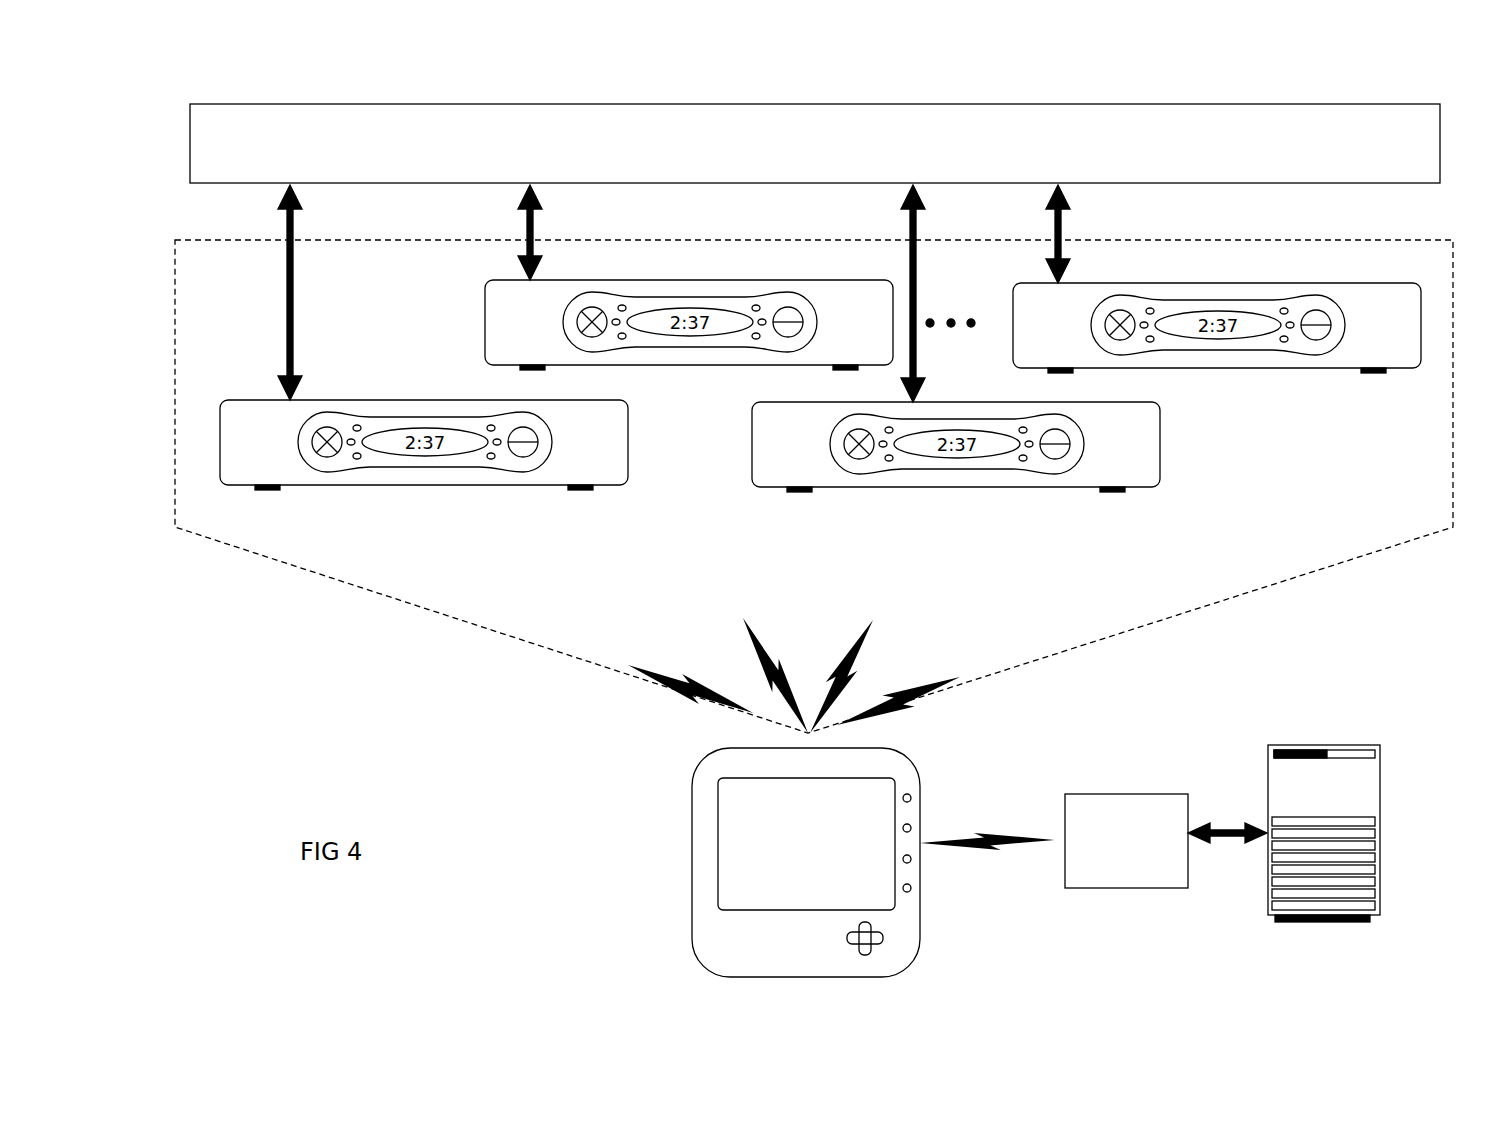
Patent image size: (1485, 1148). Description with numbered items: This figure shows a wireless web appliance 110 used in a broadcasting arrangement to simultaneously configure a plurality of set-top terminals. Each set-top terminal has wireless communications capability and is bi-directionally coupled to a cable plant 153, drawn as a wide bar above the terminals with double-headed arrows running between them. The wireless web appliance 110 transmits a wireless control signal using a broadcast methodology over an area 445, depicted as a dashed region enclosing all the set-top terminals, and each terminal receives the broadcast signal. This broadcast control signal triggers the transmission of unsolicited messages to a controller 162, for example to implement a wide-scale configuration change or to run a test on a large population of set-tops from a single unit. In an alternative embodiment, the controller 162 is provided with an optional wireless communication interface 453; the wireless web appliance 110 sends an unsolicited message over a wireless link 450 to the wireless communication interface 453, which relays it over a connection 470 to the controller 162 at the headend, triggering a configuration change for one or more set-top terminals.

The cable plant 153 is at (303, 115).
The broadcast area 445 is at (477, 628).
The wireless web appliance 110 is at (705, 903).
The wireless link 450 is at (990, 820).
The wireless communication interface 453 is at (1122, 800).
The link between wireless communication interface and controller 470 is at (1200, 820).
The controller 162 is at (1290, 745).